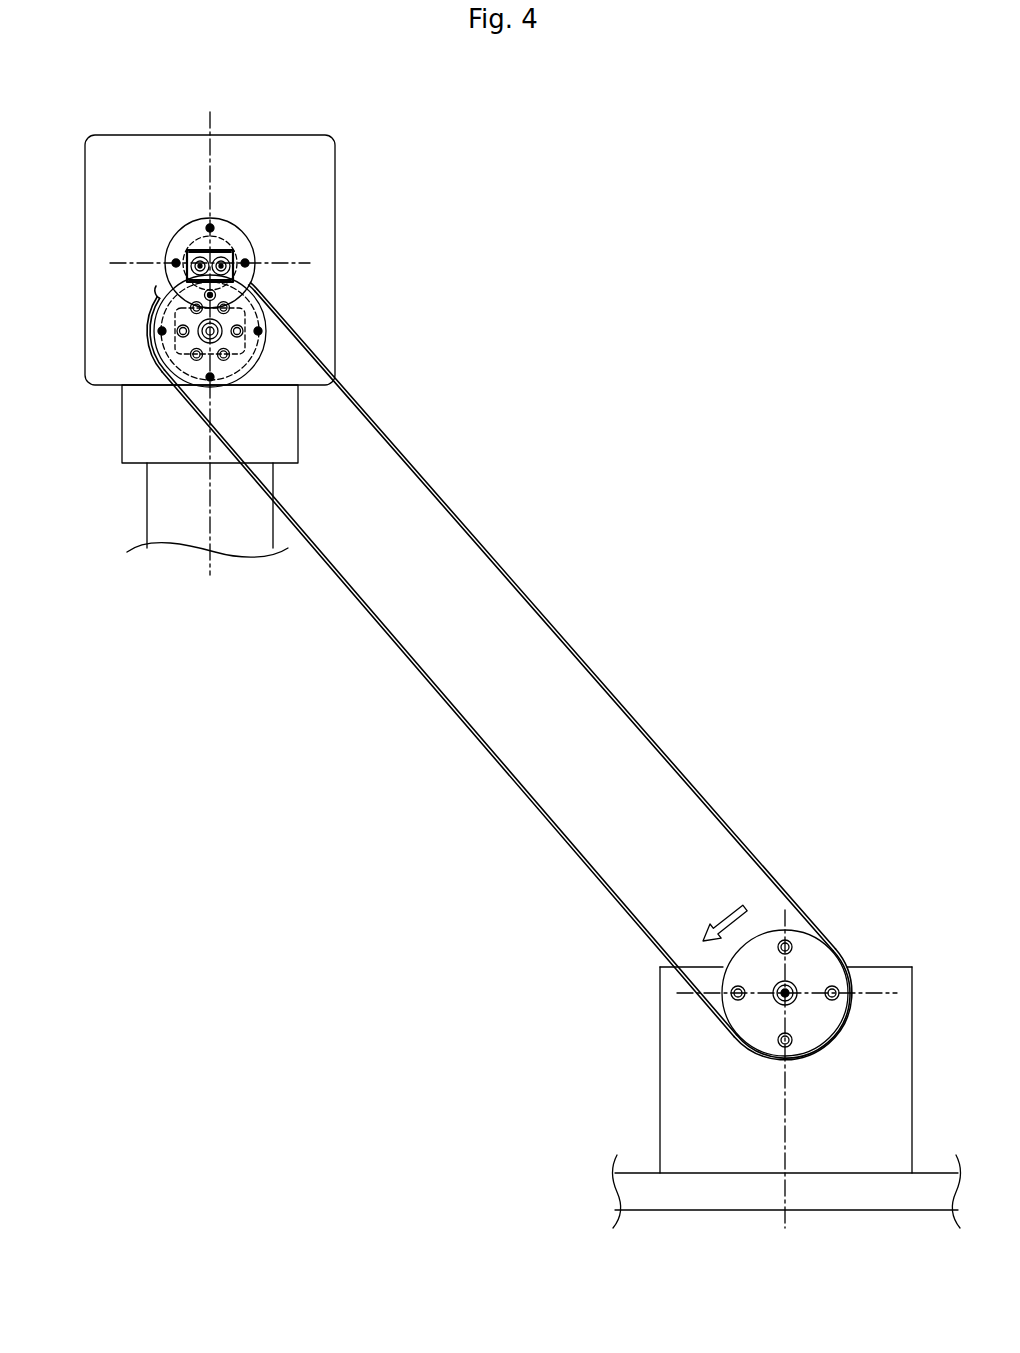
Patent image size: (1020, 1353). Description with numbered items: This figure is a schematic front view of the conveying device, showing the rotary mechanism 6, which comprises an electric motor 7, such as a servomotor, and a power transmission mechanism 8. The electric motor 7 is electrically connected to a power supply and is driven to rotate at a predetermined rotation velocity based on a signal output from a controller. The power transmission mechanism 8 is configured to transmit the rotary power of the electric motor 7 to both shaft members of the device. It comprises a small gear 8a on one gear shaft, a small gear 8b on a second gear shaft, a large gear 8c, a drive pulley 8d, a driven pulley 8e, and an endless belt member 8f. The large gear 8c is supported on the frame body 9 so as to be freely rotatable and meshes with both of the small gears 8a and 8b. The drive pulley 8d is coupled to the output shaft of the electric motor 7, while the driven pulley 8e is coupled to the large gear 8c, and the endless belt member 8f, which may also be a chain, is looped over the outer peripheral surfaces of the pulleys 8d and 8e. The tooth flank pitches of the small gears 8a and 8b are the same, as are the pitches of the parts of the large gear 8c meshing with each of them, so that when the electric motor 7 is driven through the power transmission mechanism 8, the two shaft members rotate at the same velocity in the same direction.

The rotary mechanism 6 is at (577, 238).
The electric motor 7 is at (684, 1063).
The power transmission mechanism 8 is at (438, 375).
The small gear 8a is at (222, 251).
The small gear 8b is at (197, 251).
The large gear 8c is at (257, 347).
The drive pulley 8d is at (816, 961).
The driven pulley 8e is at (152, 338).
The endless belt member 8f is at (487, 543).
The frame body 9 is at (336, 178).